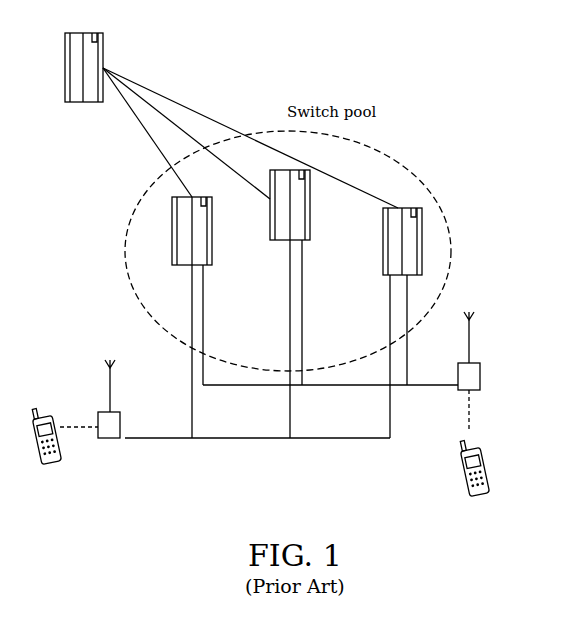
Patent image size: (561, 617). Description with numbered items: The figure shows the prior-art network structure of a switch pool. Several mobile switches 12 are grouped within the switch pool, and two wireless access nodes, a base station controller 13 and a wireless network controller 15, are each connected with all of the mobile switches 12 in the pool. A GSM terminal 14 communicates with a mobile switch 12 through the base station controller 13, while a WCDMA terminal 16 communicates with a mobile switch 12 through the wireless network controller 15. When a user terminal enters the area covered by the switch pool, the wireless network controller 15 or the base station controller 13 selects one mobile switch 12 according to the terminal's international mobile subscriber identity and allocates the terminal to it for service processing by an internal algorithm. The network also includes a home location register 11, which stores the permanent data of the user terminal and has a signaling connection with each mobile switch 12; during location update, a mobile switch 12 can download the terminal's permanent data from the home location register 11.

The home location register 11 is at (65, 80).
The mobile switch 12 is at (212, 238).
The base station controller 13 is at (118, 412).
The GSM terminal 14 is at (40, 405).
The wireless network controller 15 is at (478, 362).
The WCDMA terminal 16 is at (490, 467).